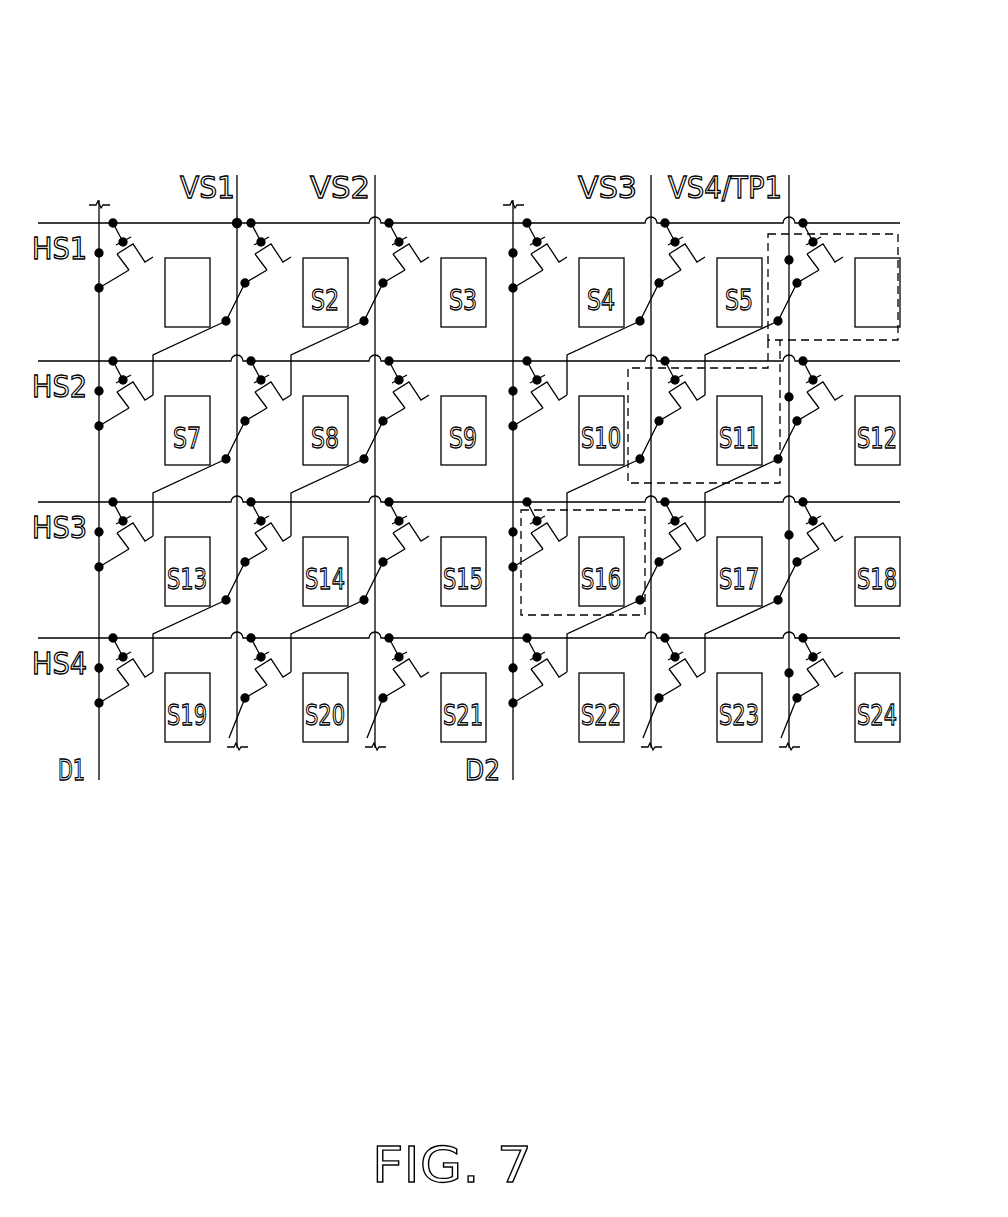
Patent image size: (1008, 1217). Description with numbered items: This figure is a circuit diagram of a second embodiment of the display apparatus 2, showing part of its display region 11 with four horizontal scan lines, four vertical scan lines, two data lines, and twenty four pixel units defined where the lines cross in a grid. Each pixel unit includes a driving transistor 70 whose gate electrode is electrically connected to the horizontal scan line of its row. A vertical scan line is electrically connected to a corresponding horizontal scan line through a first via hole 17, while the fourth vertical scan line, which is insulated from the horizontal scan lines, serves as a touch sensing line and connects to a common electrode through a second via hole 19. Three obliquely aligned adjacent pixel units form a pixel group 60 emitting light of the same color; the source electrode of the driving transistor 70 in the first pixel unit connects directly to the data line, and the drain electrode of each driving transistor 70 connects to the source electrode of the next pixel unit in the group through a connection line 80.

The display apparatus 2 is at (512, 41).
The display region 11 is at (181, 256).
The first via hole 17 is at (238, 222).
The second via hole 19 is at (789, 262).
The pixel group 60 is at (849, 234).
The driving transistor 70 is at (428, 235).
The connection line 80 is at (162, 487).